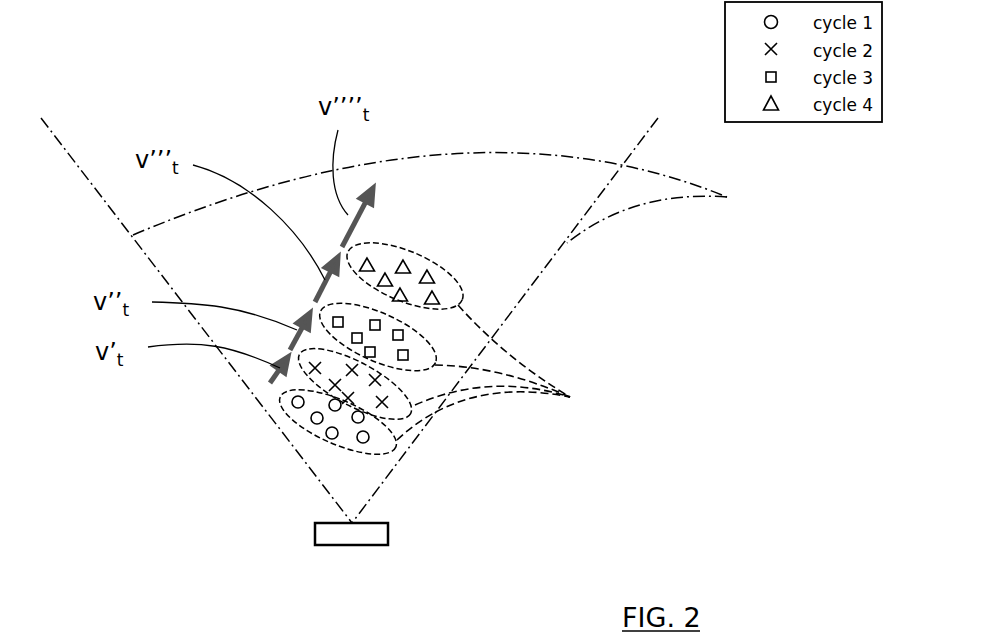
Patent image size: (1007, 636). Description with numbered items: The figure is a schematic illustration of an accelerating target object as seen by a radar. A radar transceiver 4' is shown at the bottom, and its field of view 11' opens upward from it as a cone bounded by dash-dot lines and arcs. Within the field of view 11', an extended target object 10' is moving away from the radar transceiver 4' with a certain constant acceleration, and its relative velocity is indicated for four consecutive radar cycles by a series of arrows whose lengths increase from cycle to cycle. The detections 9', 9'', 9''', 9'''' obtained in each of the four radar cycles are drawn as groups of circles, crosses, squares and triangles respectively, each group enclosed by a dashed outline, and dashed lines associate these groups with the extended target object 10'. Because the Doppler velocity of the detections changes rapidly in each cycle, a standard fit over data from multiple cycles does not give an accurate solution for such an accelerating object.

The radar transceiver 4' is at (434, 507).
The detections of the first radar cycle 9' is at (291, 433).
The detections of the second radar cycle 9'' is at (277, 384).
The detections of the third radar cycle 9''' is at (256, 315).
The detections of the fourth radar cycle 9'''' is at (482, 276).
The extended target object 10' is at (511, 372).
The field of view 11' is at (452, 198).